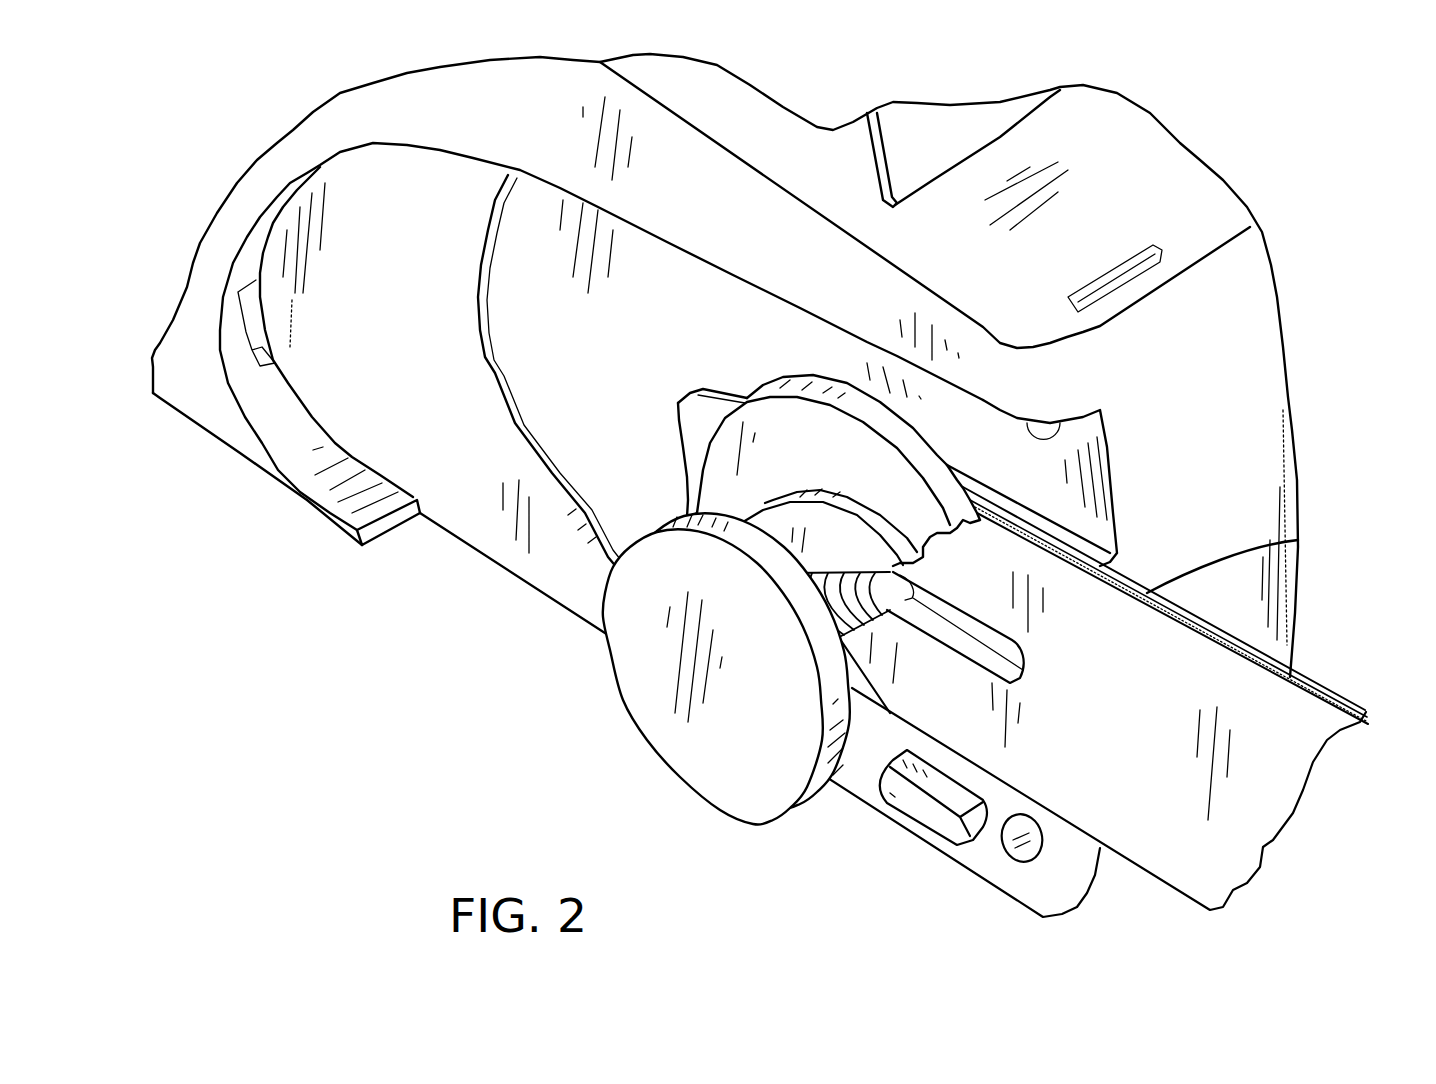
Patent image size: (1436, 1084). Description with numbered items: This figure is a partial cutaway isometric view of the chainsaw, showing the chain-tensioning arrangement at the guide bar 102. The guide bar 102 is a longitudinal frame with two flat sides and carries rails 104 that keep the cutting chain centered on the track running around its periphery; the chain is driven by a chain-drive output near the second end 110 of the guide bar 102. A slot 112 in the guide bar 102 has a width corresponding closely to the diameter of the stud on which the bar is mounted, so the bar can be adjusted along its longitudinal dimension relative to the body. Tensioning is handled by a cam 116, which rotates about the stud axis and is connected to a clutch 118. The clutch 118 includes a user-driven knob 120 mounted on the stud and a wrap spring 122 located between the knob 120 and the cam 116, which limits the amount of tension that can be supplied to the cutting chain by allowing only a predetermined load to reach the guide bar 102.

The guide bar 102 is at (1267, 720).
The rails 104 is at (1180, 610).
The second end 110 is at (990, 570).
The slot 112 is at (1025, 665).
The cam 116 is at (907, 443).
The clutch 118 is at (668, 725).
The knob 120 is at (757, 787).
The wrap spring 122 is at (886, 632).